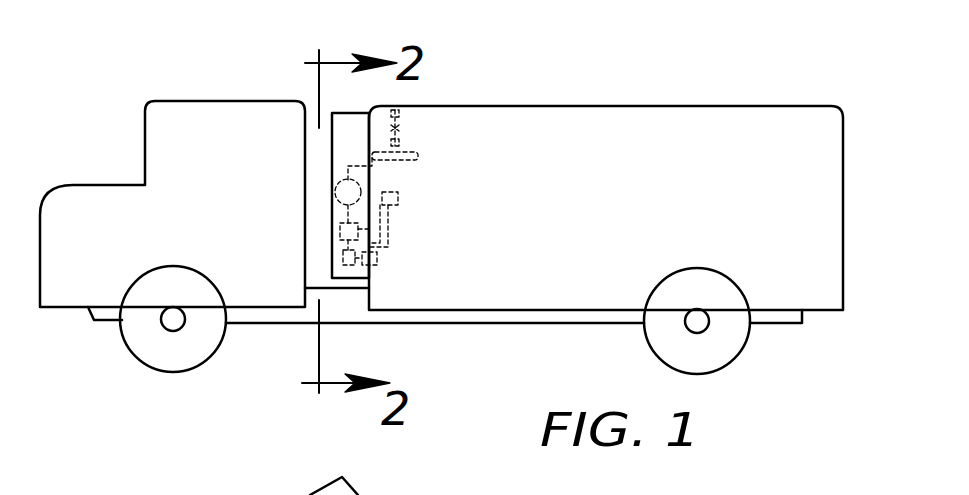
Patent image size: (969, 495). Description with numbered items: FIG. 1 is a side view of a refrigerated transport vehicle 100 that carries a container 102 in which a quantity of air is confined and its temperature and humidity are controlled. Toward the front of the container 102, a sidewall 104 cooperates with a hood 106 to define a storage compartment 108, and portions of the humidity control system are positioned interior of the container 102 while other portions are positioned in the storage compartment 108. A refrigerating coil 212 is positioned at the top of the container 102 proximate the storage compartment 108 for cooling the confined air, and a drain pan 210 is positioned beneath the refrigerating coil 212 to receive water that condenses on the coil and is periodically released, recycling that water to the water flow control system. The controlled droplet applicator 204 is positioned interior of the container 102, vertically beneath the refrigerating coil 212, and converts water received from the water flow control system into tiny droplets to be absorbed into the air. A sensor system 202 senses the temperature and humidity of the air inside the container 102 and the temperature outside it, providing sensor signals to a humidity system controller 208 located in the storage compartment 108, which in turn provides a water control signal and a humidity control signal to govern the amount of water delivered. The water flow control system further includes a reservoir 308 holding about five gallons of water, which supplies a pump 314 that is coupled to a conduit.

The refrigerated transport vehicle 100 is at (577, 87).
The container 102 is at (505, 312).
The sidewall 104 is at (347, 303).
The hood 106 is at (358, 108).
The storage compartment 108 is at (345, 136).
The sensor system 202 is at (387, 266).
The controlled droplet applicator 204 is at (400, 197).
The humidity system controller 208 is at (344, 258).
The drain pan 210 is at (421, 159).
The refrigerating coil 212 is at (403, 127).
The reservoir 308 is at (336, 178).
The pump 314 is at (340, 231).